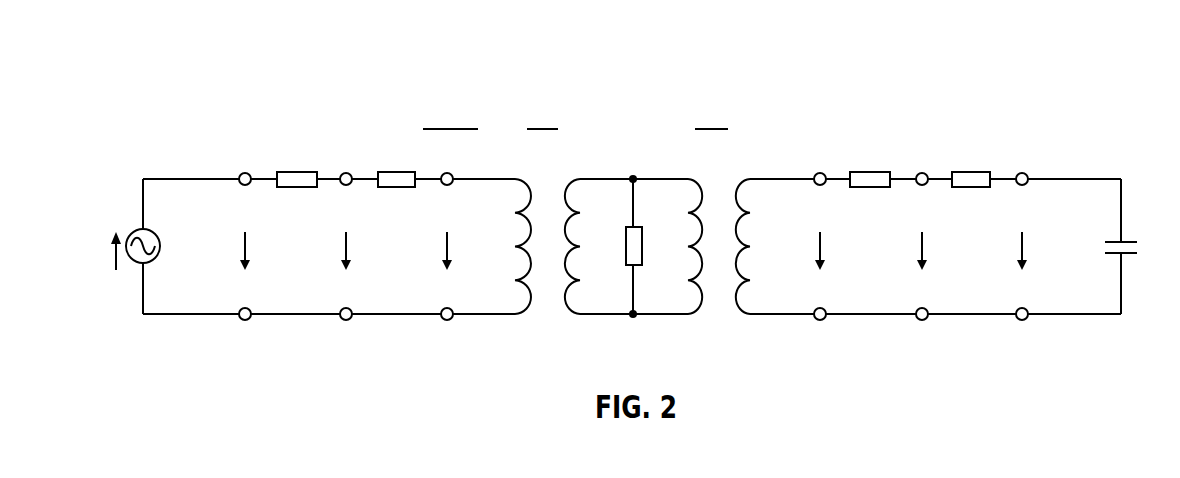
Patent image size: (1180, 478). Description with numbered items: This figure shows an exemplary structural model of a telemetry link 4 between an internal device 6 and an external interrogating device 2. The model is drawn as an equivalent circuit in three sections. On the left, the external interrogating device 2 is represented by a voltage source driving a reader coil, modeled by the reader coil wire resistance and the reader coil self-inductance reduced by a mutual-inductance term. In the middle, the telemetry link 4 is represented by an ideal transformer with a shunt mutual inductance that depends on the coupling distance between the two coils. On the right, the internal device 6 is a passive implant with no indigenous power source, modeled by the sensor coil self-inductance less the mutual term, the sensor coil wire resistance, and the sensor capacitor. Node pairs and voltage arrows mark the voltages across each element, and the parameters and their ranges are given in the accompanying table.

The external interrogating device 2 is at (400, 73).
The telemetry link 4 is at (644, 73).
The internal device 6 is at (877, 73).